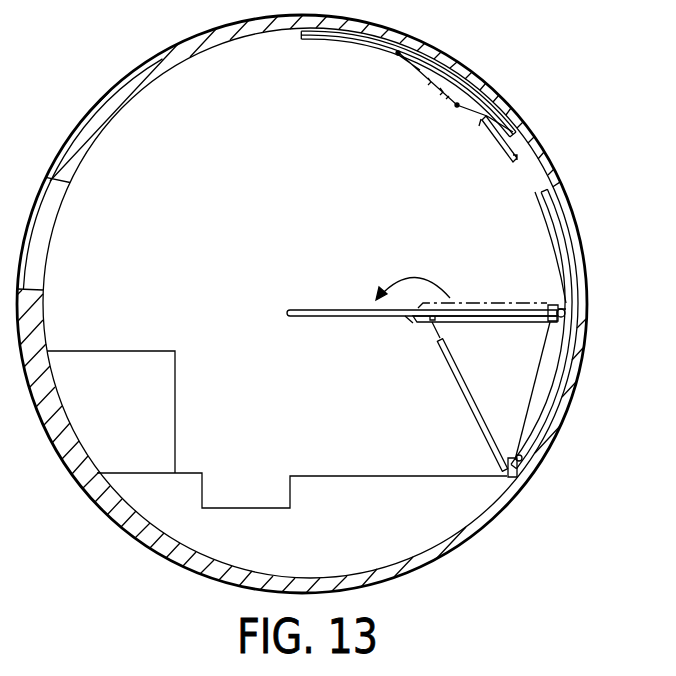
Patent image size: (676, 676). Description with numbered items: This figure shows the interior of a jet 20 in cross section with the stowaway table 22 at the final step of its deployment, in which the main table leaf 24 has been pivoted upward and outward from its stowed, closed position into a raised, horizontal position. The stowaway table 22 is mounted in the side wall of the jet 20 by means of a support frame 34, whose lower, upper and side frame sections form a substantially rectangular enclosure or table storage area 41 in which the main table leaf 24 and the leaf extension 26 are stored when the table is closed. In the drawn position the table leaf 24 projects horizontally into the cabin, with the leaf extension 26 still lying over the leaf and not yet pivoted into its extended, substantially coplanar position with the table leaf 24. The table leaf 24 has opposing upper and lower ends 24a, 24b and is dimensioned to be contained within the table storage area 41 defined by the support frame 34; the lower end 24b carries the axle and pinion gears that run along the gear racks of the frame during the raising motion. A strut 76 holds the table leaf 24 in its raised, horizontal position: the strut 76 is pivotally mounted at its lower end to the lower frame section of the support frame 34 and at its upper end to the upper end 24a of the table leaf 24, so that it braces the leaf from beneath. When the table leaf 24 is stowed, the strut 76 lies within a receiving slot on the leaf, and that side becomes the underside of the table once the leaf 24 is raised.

The jet 20 is at (313, 123).
The stowaway table 22 is at (480, 285).
The main table leaf 24 is at (480, 322).
The upper end of table leaf 24a is at (413, 320).
The lower end of table leaf 24b is at (570, 317).
The leaf extension 26 is at (342, 310).
The support frame 34 is at (566, 307).
The table storage area 41 is at (543, 385).
The strut 76 is at (463, 397).